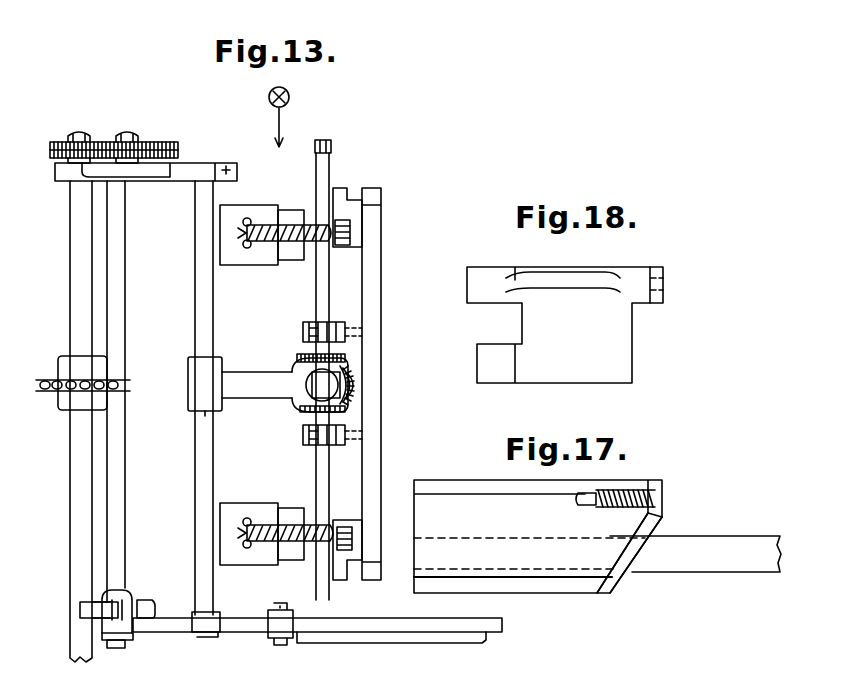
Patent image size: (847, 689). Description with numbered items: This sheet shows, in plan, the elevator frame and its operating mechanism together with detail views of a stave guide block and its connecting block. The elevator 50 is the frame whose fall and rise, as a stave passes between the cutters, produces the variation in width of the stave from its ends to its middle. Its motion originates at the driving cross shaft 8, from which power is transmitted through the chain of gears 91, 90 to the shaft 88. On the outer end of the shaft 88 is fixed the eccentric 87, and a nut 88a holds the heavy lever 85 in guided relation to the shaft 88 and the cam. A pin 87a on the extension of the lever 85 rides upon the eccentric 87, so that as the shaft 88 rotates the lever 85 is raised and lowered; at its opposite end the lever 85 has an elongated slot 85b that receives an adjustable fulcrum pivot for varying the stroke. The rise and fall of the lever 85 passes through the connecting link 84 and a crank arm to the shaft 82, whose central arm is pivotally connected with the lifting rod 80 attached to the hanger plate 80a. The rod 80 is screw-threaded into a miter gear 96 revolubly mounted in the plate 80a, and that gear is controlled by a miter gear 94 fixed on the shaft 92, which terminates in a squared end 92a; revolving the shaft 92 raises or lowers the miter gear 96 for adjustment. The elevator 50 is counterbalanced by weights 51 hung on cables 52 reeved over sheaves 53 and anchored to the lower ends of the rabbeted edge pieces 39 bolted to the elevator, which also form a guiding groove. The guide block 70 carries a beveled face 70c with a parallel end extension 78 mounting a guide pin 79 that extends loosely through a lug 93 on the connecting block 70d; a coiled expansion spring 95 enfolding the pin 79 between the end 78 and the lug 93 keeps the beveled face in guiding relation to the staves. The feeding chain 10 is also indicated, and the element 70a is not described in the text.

In FIG. 13, the cross shaft 8 is at (80, 510).
In FIG. 13, the drive chain 10 is at (58, 392).
In FIG. 13, the rabbeted edge pieces 39 is at (340, 189).
In FIG. 13, the elevator 50 is at (372, 462).
In FIG. 13, the weights 51 is at (256, 212).
In FIG. 13, the cables 52 is at (272, 242).
In FIG. 13, the sheaves 53 is at (288, 222).
In FIG. 17, the block 70 is at (538, 536).
In FIG. 17, the carrier bar extension 70a is at (695, 568).
In FIG. 17, the beveled face 70c is at (660, 531).
In FIG. 18, the block 70d is at (618, 358).
In FIG. 17, the parallel end extensions 78 is at (658, 500).
In FIG. 17, the guide pins 79 is at (584, 505).
In FIG. 13, the lifting rod 80 is at (320, 385).
In FIG. 13, the hanger plate 80a is at (306, 428).
In FIG. 13, the shaft 82 is at (206, 456).
In FIG. 13, the connecting link 84 is at (278, 645).
In FIG. 13, the lever 85 is at (390, 625).
In FIG. 13, the elongated slot 85b is at (366, 643).
In FIG. 13, the eccentric 87 is at (246, 380).
In FIG. 13, the pin 87a is at (98, 606).
In FIG. 13, the shaft 88 is at (125, 308).
In FIG. 13, the nut 88a is at (134, 642).
In FIG. 13, the gear 90 is at (178, 148).
In FIG. 13, the gear 91 is at (58, 142).
In FIG. 13, the shaft 92 is at (318, 290).
In FIG. 13, the squared end 92a is at (333, 149).
In FIG. 18, the lugs 93 is at (656, 268).
In FIG. 13, the miter gear 94 is at (298, 358).
In FIG. 17, the coiled expansion springs 95 is at (627, 489).
In FIG. 13, the miter gear 96 is at (350, 382).